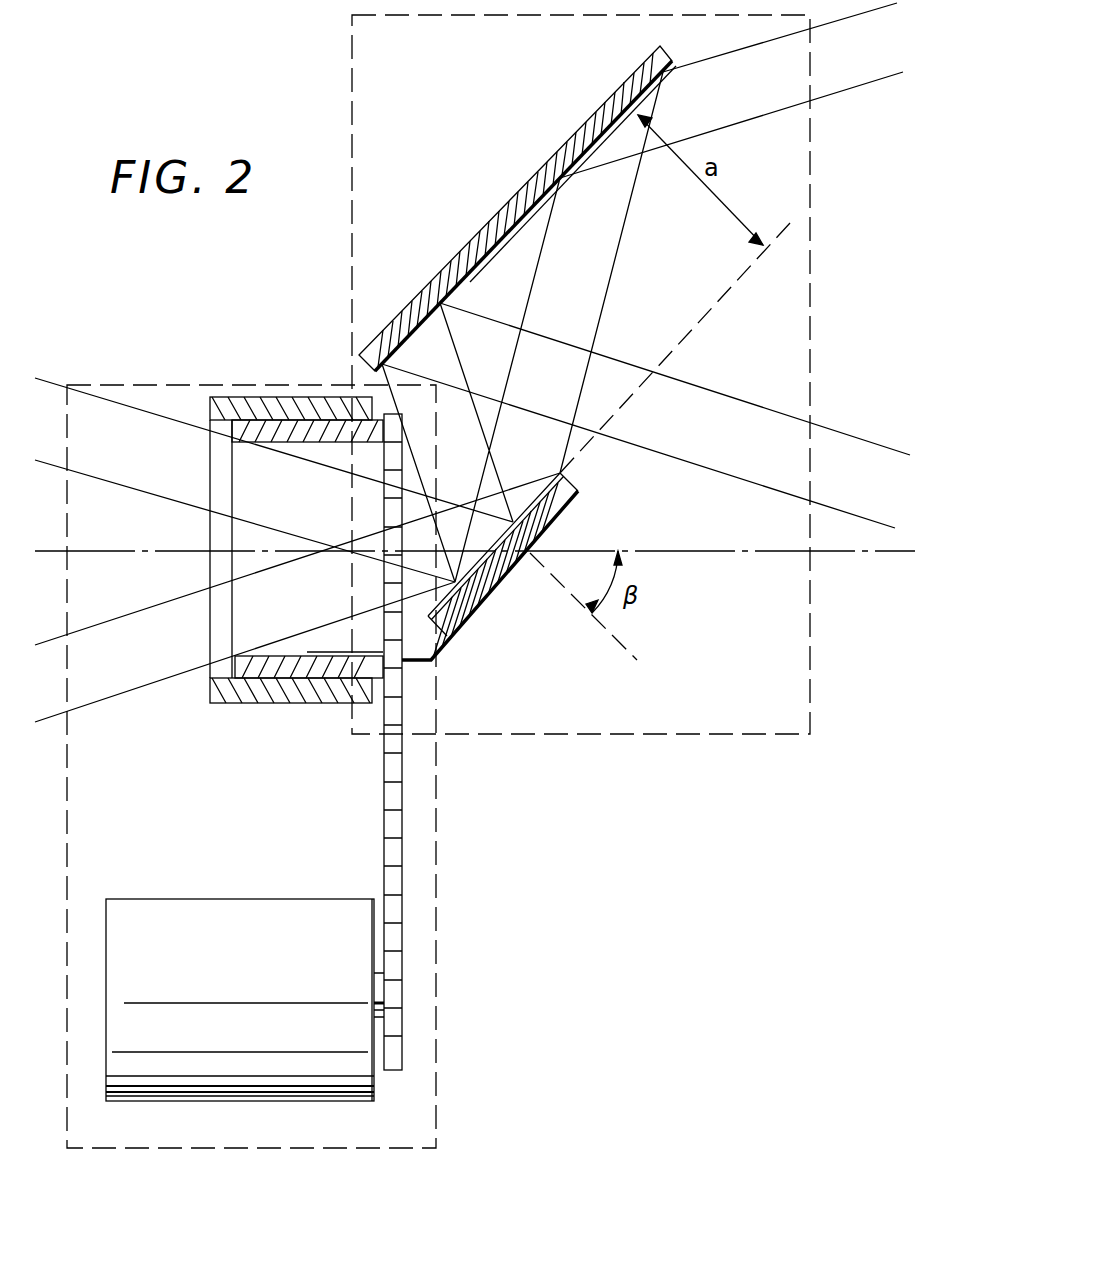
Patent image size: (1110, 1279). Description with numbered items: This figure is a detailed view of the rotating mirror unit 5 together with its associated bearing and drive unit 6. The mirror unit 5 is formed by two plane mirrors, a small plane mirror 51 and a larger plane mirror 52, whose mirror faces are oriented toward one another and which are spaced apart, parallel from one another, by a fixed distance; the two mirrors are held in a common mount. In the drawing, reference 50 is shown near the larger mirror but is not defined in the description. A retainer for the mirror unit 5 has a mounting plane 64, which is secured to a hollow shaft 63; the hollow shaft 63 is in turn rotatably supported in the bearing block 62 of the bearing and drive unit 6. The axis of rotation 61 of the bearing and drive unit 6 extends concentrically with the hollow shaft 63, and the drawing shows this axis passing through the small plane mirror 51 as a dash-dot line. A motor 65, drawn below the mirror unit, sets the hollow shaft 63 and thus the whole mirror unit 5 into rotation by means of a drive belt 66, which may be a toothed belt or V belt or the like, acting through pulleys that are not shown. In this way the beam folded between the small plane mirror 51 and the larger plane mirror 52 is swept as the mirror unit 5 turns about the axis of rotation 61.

The rotating mirror unit 5 is at (640, 744).
The bearing and drive unit 6 is at (437, 890).
The scanner 50 is at (582, 287).
The small plane mirror 51 is at (492, 582).
The larger plane mirror 52 is at (470, 240).
The axis of rotation 61 is at (857, 553).
The bearing block 62 is at (248, 397).
The hollow shaft 63 is at (282, 421).
The mounting plane 64 is at (437, 662).
The motor 65 is at (233, 910).
The drive belt 66 is at (407, 945).